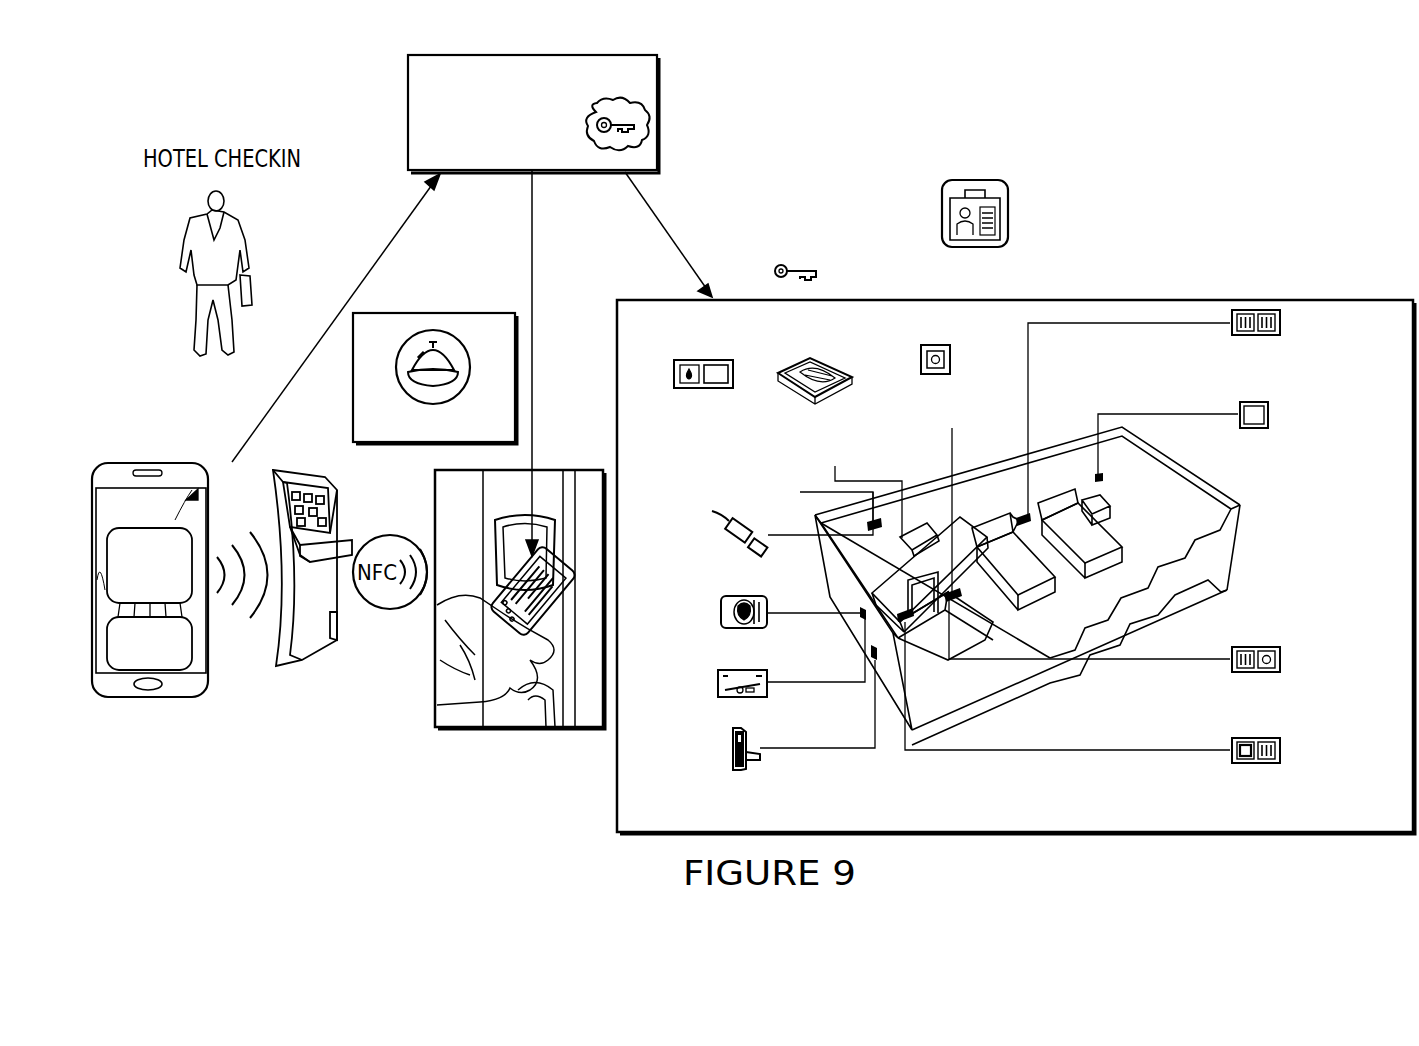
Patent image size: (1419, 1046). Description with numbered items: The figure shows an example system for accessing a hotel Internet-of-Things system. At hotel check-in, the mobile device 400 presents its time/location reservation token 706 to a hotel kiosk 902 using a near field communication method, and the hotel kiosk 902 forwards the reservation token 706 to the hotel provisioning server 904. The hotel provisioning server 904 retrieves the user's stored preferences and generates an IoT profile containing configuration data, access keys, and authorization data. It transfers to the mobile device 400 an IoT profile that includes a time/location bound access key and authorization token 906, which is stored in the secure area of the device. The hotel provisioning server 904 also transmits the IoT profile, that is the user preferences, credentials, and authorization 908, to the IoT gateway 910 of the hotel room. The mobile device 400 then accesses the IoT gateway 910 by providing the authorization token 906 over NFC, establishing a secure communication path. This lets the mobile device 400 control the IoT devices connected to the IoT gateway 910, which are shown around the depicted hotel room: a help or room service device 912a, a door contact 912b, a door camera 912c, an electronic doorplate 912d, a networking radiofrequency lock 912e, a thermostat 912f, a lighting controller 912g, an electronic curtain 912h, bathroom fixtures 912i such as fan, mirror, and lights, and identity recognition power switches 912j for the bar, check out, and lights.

The mobile device 400 is at (150, 698).
The time/location reservation token 706 is at (383, 443).
The hotel kiosk 902 is at (360, 630).
The hotel provisioning server 904 is at (408, 112).
The time/location bound access key and authorization token 906 is at (796, 262).
The user preferences, credentials, and/or authorization 908 is at (1009, 212).
The IoT gateway 910 is at (835, 397).
The help or room service device 912a is at (703, 389).
The door contact 912b is at (722, 536).
The door camera 912c is at (720, 610).
The electronic doorplate 912d is at (718, 683).
The networking radiofrequency lock 912e is at (733, 752).
The thermostat 912f is at (921, 357).
The lighting controller 912g is at (1281, 323).
The electronic curtain 912h is at (1269, 414).
The bathroom fixtures 912i is at (1281, 660).
The identity recognition power switches 912j is at (1281, 750).